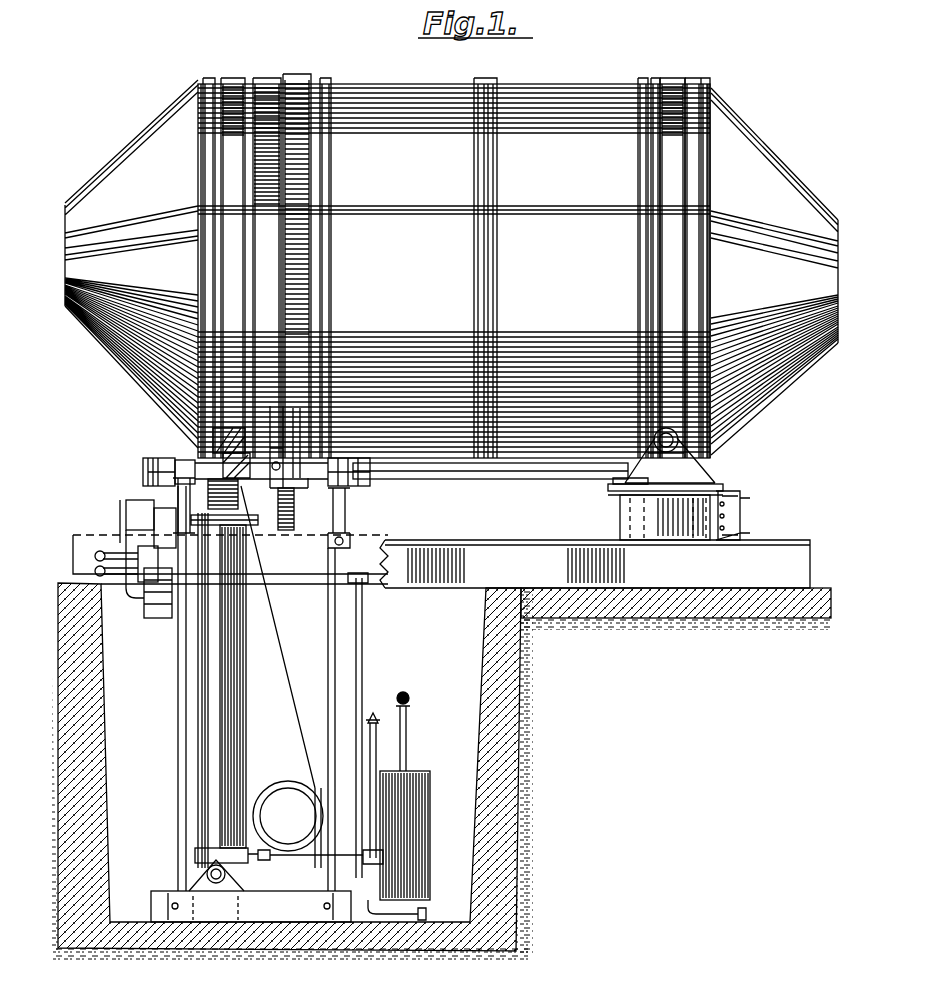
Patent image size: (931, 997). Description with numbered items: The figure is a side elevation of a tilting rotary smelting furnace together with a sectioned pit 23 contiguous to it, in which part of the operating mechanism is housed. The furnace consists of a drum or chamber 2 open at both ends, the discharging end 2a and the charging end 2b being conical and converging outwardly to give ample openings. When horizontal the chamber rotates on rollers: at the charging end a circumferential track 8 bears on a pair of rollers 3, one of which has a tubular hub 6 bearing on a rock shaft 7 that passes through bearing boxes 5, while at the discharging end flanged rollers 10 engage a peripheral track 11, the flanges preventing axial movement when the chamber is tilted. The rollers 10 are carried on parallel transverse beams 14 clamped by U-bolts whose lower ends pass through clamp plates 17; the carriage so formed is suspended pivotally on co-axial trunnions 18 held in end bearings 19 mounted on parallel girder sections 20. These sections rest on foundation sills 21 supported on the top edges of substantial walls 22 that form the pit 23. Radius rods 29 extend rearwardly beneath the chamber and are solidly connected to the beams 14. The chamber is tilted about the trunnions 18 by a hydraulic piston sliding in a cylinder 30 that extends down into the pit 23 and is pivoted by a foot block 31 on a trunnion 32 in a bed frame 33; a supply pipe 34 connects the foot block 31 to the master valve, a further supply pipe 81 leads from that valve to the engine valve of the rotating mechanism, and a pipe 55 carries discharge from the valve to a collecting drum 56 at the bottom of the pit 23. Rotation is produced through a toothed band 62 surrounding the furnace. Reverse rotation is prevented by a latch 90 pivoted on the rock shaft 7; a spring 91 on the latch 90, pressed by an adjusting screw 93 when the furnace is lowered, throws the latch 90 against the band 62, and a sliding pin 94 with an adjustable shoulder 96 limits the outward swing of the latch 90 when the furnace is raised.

The drum or chamber 2 is at (548, 97).
The discharging end 2a is at (735, 395).
The charging end 2b is at (160, 120).
The circumferential track 8 is at (224, 72).
The toothed band 62 is at (290, 78).
The peripheral track 11 is at (665, 78).
The sliding pin 94 is at (258, 350).
The adjusting screw 93 is at (285, 395).
The latch 90 is at (340, 388).
The rock shaft 7 is at (205, 440).
The bearing boxes 5 is at (135, 458).
The rollers 3 is at (238, 470).
The tubular hub 6 is at (232, 490).
The spring 91 is at (286, 505).
The adjustable shoulder 96 is at (340, 480).
The supply pipe 81 is at (98, 545).
The cylinder 30 is at (205, 680).
The foot block 31 is at (192, 848).
The trunnion 32 is at (196, 868).
The bed frame 33 is at (230, 900).
The supply pipe 34 is at (256, 812).
The pipe 55 is at (402, 690).
The collecting drum 56 is at (408, 776).
The pit 23 is at (432, 660).
The walls 22 is at (745, 570).
The foundation sills 21 is at (458, 545).
The radius rods 29 is at (490, 470).
The trunnions 18 is at (612, 476).
The end bearings 19 is at (668, 454).
The rollers 10 is at (700, 453).
The clamp plates 17 is at (715, 480).
The girder sections 20 is at (722, 512).
The transverse beams 14 is at (688, 522).